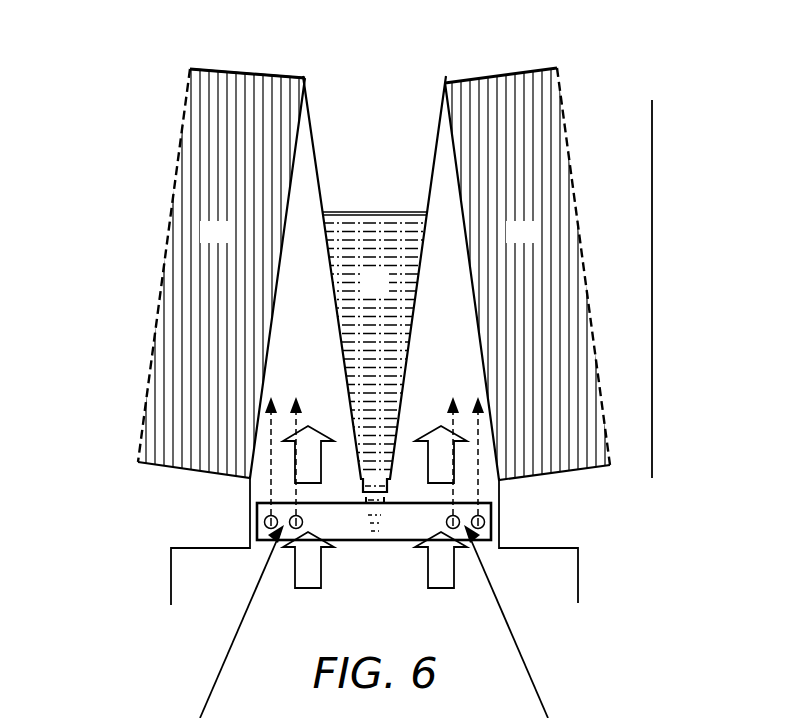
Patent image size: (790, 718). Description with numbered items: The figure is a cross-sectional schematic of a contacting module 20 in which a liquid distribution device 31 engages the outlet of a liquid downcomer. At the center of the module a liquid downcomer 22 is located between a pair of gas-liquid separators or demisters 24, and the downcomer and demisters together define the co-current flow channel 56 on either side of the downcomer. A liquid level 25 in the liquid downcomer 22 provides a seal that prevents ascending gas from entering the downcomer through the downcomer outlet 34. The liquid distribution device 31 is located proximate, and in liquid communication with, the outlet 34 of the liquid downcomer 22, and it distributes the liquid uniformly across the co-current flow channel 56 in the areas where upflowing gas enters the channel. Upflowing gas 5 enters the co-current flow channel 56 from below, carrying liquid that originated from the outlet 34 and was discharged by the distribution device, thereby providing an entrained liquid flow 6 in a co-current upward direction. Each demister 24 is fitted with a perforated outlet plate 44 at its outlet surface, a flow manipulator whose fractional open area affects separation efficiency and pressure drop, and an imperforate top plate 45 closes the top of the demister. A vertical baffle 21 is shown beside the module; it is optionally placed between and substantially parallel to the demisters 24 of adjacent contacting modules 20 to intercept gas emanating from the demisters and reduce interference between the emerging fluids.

The contacting module 20 is at (108, 44).
The vertical baffle 21 is at (653, 117).
The liquid downcomer 22 is at (338, 322).
The demister 24 is at (203, 243).
The liquid level 25 is at (363, 294).
The liquid distribution device 31 is at (392, 543).
The liquid downcomer outlet 34 is at (372, 517).
The perforated outlet plate 44 is at (162, 289).
The imperforate top plate 45 is at (223, 68).
The upflowing gas 5 is at (305, 588).
The entrained liquid flow 6 is at (297, 404).
The co-current flow channel 56 is at (295, 279).